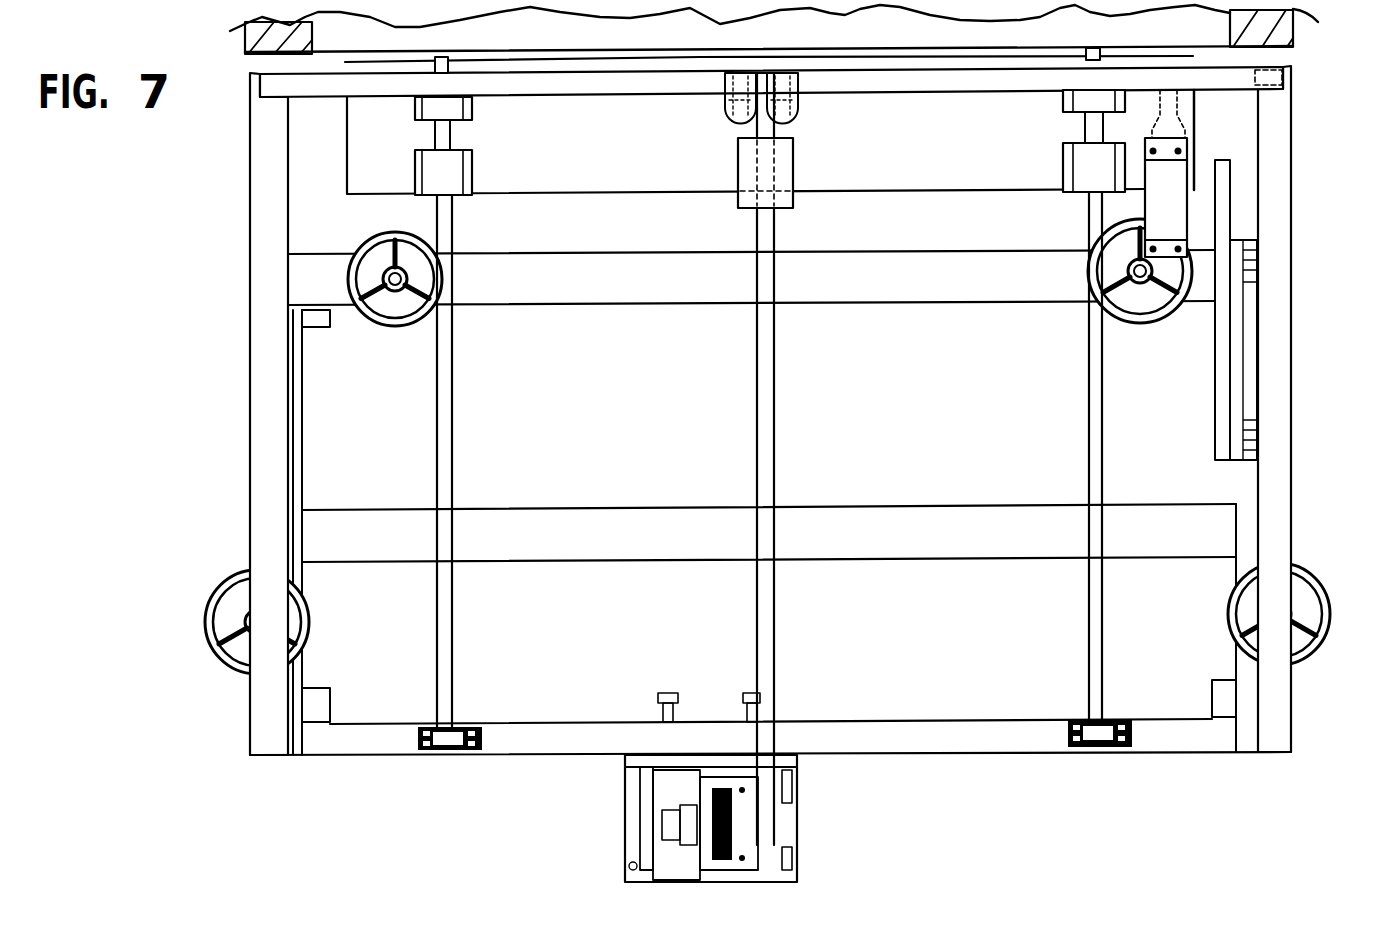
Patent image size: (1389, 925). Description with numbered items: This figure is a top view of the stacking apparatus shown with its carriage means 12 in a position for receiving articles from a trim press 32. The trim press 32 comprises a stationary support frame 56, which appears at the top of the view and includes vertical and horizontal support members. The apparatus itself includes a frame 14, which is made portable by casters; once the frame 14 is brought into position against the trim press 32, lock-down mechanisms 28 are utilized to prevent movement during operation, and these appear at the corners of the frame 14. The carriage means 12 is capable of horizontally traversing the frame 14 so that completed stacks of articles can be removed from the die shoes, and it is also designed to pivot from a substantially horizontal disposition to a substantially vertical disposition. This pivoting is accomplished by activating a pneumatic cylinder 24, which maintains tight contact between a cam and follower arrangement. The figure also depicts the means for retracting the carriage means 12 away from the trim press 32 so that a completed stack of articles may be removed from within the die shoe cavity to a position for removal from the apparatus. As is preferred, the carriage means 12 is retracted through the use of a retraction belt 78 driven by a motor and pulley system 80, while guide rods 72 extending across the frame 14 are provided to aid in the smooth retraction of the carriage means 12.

The carriage means 12 is at (346, 148).
The frame 14 is at (1291, 235).
The pneumatic cylinder 24 is at (1191, 108).
The lock-down mechanisms 28 is at (402, 332).
The trim press 32 is at (550, 43).
The stationary support frame 56 is at (1293, 47).
The guide rods 72 is at (453, 391).
The retraction belt 78 is at (775, 382).
The motor and pulley system 80 is at (797, 773).